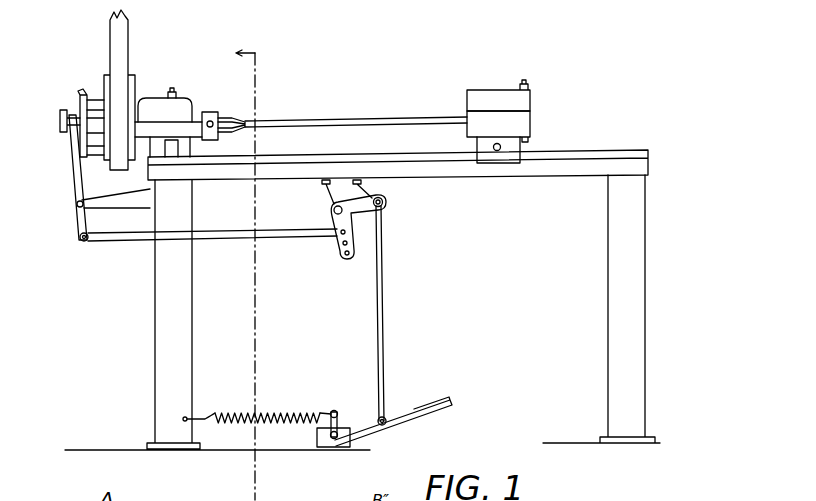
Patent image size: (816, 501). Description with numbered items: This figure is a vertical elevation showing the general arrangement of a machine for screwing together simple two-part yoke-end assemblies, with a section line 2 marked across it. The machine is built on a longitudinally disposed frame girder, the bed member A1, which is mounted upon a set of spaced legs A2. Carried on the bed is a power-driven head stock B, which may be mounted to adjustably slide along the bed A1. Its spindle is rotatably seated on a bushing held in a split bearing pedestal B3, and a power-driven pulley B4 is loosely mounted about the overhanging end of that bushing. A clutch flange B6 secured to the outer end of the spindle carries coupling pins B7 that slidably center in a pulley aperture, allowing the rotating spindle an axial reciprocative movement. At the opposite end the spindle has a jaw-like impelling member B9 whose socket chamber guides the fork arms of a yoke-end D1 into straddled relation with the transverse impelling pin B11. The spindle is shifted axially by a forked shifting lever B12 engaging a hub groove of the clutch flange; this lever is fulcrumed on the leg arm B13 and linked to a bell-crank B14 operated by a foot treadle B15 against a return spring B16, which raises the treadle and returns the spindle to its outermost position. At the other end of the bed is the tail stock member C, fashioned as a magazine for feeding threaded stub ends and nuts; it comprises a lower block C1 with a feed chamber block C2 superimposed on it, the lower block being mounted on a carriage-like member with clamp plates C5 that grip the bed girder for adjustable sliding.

The bed member A1 is at (437, 170).
The legs A2 is at (177, 332).
The head stock B is at (143, 112).
The split bearing pedestal B3 is at (180, 128).
The power-driven pulley B4 is at (132, 78).
The clutch flange B6 is at (85, 95).
The coupling pins B7 is at (70, 163).
The impelling member B9 is at (212, 113).
The transverse impelling pin B11 is at (220, 115).
The forked shifting lever B12 is at (75, 180).
The leg arm B13 is at (118, 202).
The bell-crank B14 is at (355, 210).
The foot treadle B15 is at (432, 402).
The return spring B16 is at (270, 413).
The tail stock member C is at (522, 88).
The lower block C1 is at (523, 125).
The feed chamber block C2 is at (523, 100).
The clamp plates C5 is at (510, 157).
The yoke-end D1 is at (303, 120).
The section line 2- 2 is at (244, 275).